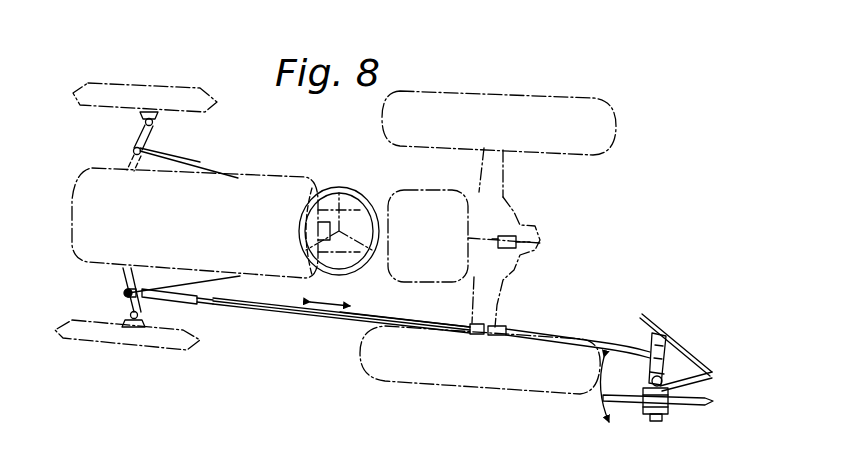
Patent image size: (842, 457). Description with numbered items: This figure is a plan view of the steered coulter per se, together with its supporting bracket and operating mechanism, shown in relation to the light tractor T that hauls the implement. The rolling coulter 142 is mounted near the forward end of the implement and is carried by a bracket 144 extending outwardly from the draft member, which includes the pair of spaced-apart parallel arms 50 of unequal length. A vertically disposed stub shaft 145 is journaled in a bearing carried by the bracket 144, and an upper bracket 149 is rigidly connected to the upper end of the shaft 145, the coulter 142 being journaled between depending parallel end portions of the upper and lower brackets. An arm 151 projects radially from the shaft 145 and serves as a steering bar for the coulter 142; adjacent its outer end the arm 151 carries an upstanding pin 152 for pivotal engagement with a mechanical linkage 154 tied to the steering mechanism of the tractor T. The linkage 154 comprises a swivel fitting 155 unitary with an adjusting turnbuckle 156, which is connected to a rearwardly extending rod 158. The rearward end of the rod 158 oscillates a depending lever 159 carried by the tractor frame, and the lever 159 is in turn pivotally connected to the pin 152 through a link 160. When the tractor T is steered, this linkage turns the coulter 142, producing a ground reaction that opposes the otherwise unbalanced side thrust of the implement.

The tractor T is at (270, 172).
The arms 50 is at (655, 320).
The rolling coulter 142 is at (702, 406).
The bracket 144 is at (686, 363).
The stub shaft 145 is at (603, 381).
The upper bracket 149 is at (652, 418).
The arm 151 is at (652, 360).
The upstanding pin 152 is at (660, 352).
The mechanical linkage 154 is at (302, 317).
The swivel fitting 155 is at (125, 293).
The adjusting turnbuckle 156 is at (175, 299).
The rod 158 is at (350, 322).
The depending lever 159 is at (478, 325).
The link 160 is at (545, 331).